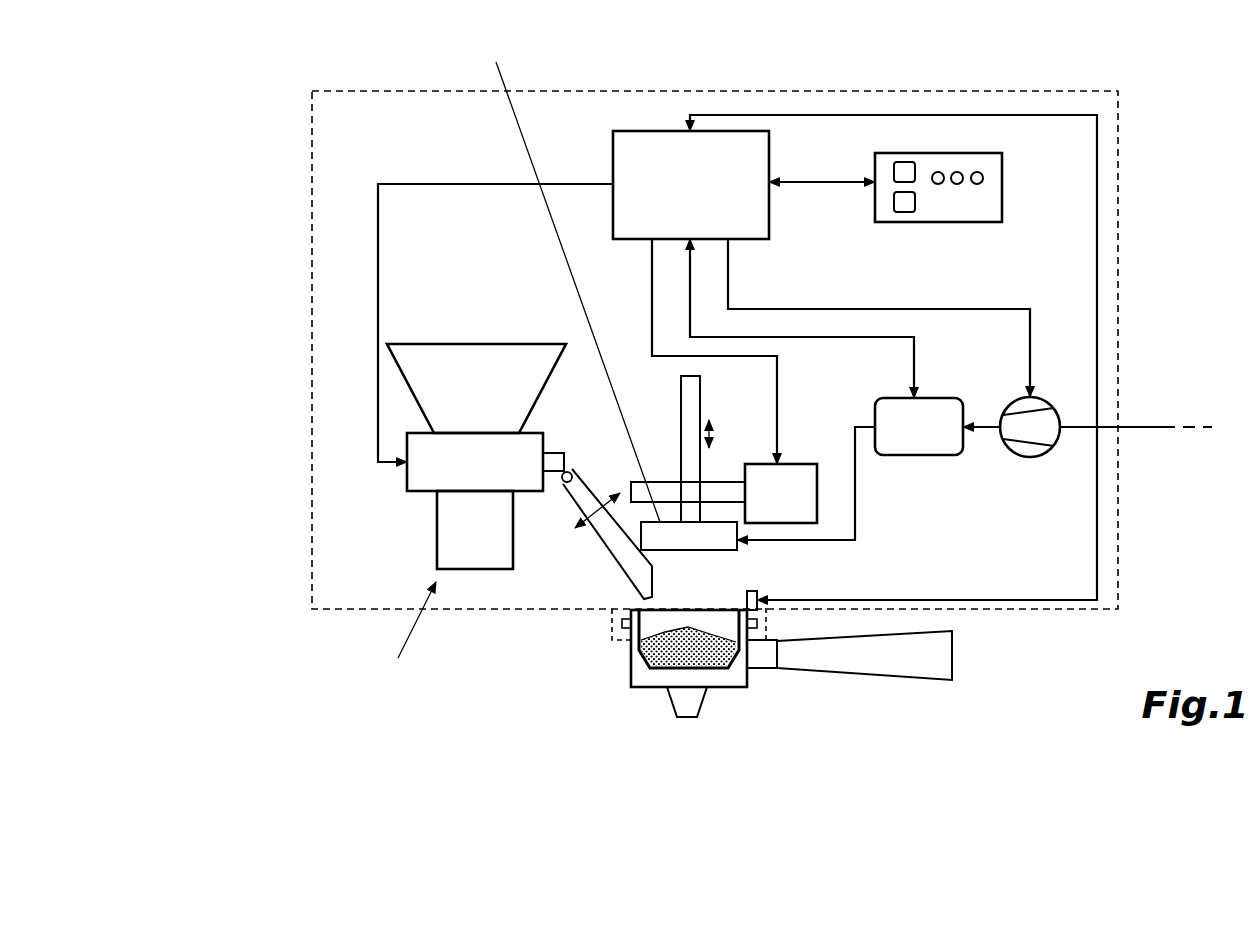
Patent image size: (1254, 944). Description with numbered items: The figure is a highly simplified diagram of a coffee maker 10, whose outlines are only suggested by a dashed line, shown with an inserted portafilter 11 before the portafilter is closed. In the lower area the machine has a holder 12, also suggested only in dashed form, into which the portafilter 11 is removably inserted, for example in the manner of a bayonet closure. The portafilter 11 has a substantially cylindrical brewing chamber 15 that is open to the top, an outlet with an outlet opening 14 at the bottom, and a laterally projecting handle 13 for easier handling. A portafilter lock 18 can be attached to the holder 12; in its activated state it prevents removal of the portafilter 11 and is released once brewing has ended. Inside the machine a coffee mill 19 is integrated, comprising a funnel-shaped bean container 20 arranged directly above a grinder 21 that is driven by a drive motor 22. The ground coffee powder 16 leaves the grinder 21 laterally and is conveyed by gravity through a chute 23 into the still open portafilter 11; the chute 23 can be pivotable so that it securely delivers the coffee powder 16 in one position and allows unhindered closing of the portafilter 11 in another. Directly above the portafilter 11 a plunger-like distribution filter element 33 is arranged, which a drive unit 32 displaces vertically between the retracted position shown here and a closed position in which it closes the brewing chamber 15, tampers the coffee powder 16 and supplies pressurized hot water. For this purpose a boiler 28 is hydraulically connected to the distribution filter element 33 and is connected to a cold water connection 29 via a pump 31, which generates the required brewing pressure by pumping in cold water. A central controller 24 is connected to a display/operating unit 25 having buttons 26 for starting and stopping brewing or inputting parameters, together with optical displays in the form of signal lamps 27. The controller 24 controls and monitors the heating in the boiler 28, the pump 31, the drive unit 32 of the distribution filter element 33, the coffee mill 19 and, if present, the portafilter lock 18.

The coffee maker 10 is at (312, 197).
The portafilter 11 is at (630, 698).
The holder 12 is at (613, 637).
The handle 13 is at (912, 660).
The outlet opening 14 is at (688, 705).
The brewing chamber 15 is at (717, 620).
The coffee powder 16 is at (667, 668).
The portafilter lock 18 is at (757, 605).
The coffee mill 19 is at (386, 675).
The bean container 20 is at (425, 393).
The grinder 21 is at (427, 471).
The drive motor 22 is at (455, 530).
The chute 23 is at (602, 522).
The central controller 24 is at (691, 185).
The display/operating unit 25 is at (1002, 182).
The buttons 26 is at (903, 172).
The indicator lamps 27 is at (953, 173).
The boiler 28 is at (933, 435).
The cold water connection 29 is at (1147, 428).
The pump 31 is at (1030, 457).
The drive unit 32 is at (724, 463).
The distribution filter element 33 is at (569, 275).